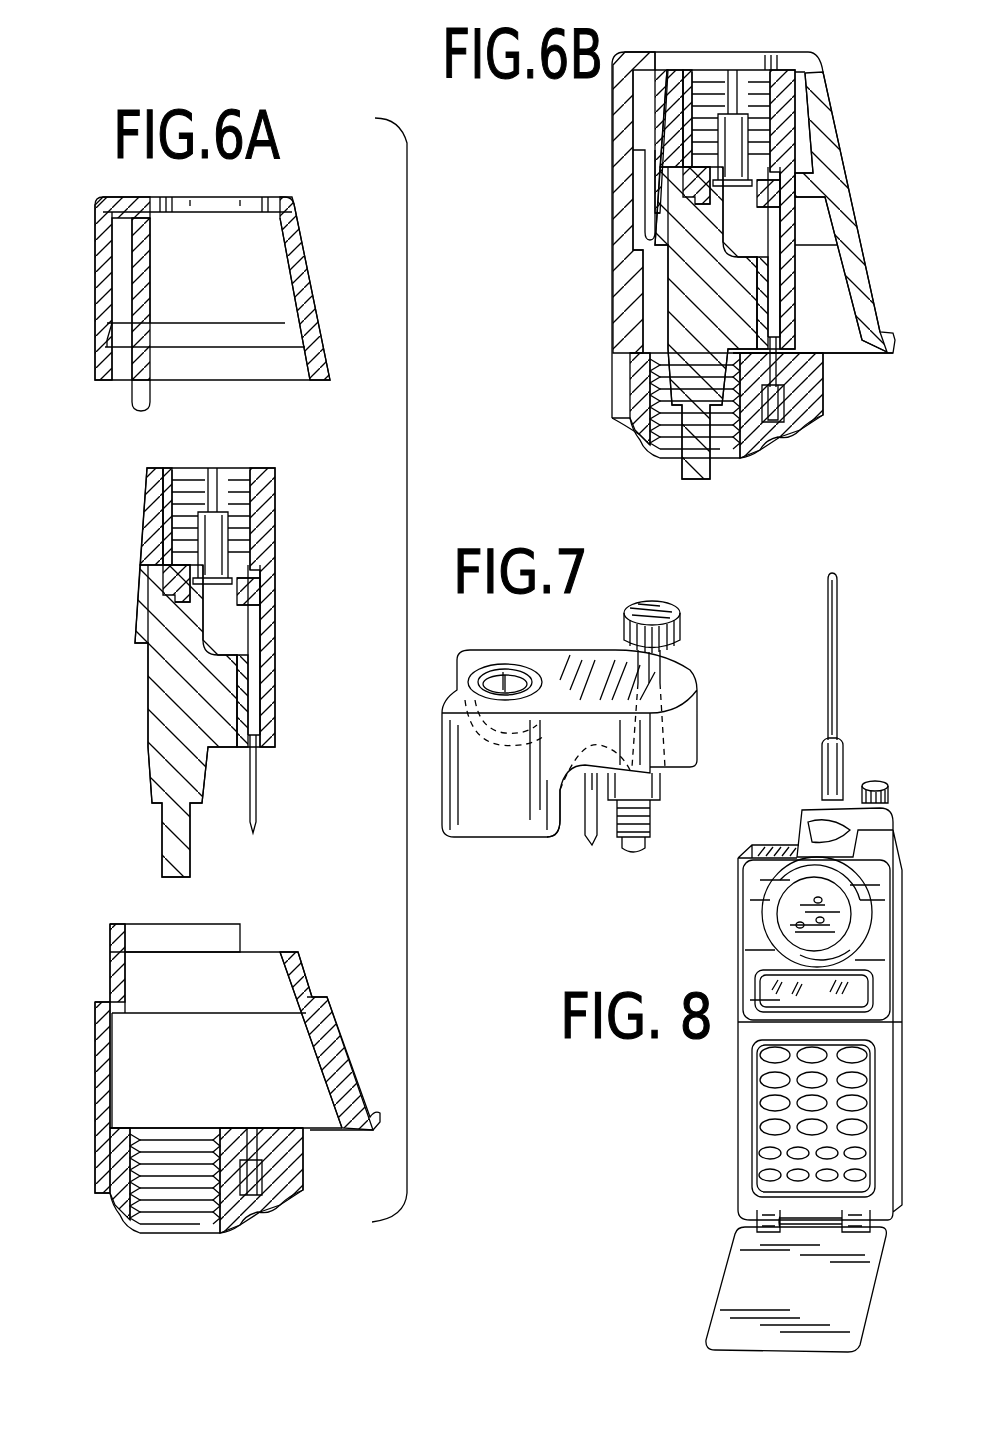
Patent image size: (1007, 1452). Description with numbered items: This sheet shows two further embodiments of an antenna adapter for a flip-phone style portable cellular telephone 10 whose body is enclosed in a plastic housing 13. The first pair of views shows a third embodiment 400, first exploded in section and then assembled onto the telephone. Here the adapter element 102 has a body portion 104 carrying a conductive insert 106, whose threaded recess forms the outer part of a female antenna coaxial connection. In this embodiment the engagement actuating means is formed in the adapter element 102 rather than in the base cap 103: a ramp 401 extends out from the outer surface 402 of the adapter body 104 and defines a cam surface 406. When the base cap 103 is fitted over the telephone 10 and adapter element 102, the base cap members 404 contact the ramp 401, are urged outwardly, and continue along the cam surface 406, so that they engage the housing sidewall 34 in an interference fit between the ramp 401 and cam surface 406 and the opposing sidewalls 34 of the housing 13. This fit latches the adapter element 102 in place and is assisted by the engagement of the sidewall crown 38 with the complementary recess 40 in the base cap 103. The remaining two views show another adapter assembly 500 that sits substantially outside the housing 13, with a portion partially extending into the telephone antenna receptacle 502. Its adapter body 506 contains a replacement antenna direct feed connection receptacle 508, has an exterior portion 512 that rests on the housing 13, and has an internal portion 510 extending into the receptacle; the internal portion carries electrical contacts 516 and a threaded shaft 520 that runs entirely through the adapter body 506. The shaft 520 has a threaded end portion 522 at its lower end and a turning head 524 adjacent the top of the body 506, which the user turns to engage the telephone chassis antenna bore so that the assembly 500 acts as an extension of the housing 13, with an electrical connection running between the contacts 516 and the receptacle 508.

In FIG. 6A, the portable hand-held cellular telephone 10 is at (348, 1073).
In FIG. 8, the portable hand-held cellular telephone 10 is at (740, 1093).
In FIG. 6A, the plastic housing 13 is at (97, 1107).
In FIG. 8, the plastic housing 13 is at (738, 924).
In FIG. 6A, the housing sidewall 34 is at (290, 992).
In FIG. 6A, the crown 38 is at (108, 972).
In FIG. 6A, the recess 40 is at (292, 337).
In FIG. 6A, the antenna adapter element 102 is at (177, 672).
In FIG. 6A, the base cap 103 is at (97, 298).
In FIG. 6A, the adapter body portion 104 is at (165, 685).
In FIG. 6A, the conductive insert 106 is at (252, 472).
In FIG. 6A, the third embodiment 400 is at (408, 355).
In FIG. 6A, the ramp 401 is at (142, 603).
In FIG. 6B, the ramp 401 is at (652, 228).
In FIG. 6A, the outer surface 402 is at (147, 478).
In FIG. 6A, the base cap members 404 is at (142, 394).
In FIG. 6A, the cam surface 406 is at (145, 540).
In FIG. 6B, the cam surface 406 is at (672, 213).
In FIG. 7, the adapter assembly 500 is at (569, 761).
In FIG. 8, the telephone antenna receptacle 502 is at (893, 840).
In FIG. 7, the adapter body 506 is at (485, 822).
In FIG. 7, the replacement antenna direct feed connection receptacle 508 is at (520, 678).
In FIG. 7, the internal portion 510 is at (660, 790).
In FIG. 7, the exterior portion 512 is at (547, 820).
In FIG. 8, the exterior portion 512 is at (808, 827).
In FIG. 7, the electrical contacts 516 is at (594, 822).
In FIG. 7, the threaded shaft 520 is at (652, 805).
In FIG. 7, the threaded end portion 522 is at (648, 835).
In FIG. 7, the turning head 524 is at (657, 613).